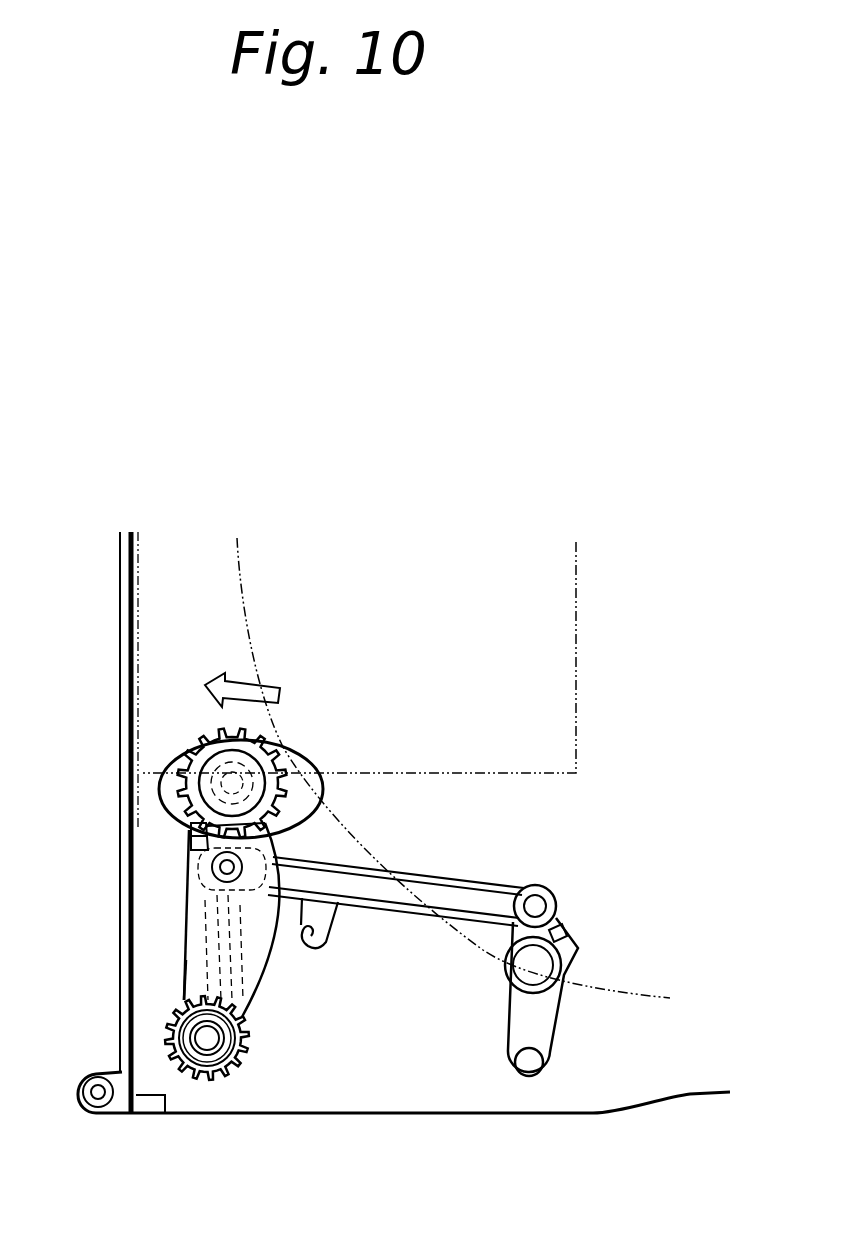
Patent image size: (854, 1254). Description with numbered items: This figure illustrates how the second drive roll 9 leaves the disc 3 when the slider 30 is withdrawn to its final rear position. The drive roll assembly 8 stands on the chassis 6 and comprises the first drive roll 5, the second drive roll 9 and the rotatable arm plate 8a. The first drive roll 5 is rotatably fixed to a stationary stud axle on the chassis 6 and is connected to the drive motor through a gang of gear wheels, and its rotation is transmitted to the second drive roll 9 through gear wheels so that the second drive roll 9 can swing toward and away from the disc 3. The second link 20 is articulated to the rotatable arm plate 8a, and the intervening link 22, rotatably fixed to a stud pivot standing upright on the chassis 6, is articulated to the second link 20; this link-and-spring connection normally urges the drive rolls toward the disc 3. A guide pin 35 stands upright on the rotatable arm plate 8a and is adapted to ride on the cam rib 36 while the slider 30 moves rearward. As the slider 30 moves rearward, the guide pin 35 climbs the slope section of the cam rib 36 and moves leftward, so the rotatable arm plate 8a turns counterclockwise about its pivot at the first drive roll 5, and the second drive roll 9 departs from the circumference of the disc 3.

The disc 3 is at (240, 572).
The first drive roll 5 is at (247, 1033).
The chassis 6 is at (118, 578).
The drive roll assembly 8 is at (178, 942).
The rotatable arm plate 8a is at (203, 982).
The second drive roll 9 is at (180, 770).
The second link 20 is at (455, 880).
The intervening link 22 is at (557, 1020).
The slider 30 is at (578, 628).
The guide pin 35 is at (187, 837).
The cam rib 36 is at (287, 748).